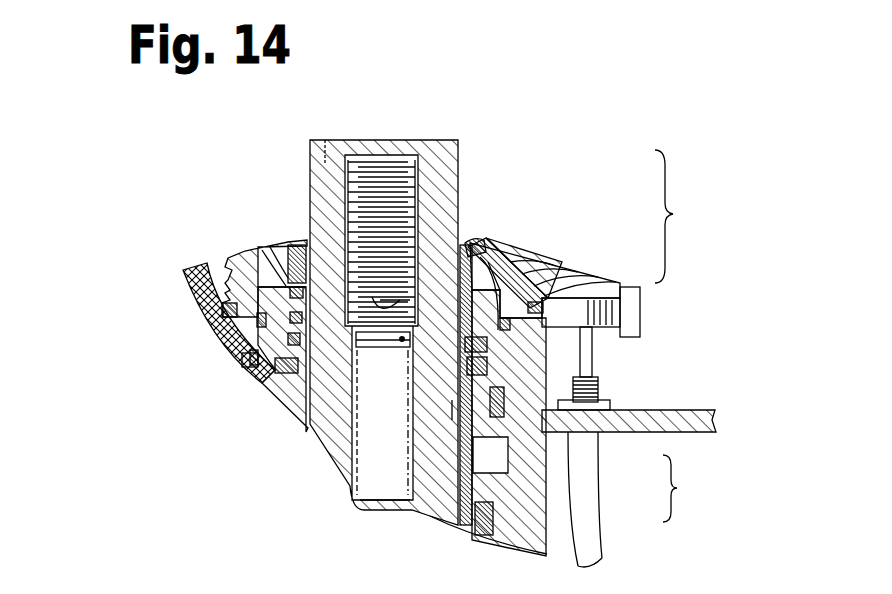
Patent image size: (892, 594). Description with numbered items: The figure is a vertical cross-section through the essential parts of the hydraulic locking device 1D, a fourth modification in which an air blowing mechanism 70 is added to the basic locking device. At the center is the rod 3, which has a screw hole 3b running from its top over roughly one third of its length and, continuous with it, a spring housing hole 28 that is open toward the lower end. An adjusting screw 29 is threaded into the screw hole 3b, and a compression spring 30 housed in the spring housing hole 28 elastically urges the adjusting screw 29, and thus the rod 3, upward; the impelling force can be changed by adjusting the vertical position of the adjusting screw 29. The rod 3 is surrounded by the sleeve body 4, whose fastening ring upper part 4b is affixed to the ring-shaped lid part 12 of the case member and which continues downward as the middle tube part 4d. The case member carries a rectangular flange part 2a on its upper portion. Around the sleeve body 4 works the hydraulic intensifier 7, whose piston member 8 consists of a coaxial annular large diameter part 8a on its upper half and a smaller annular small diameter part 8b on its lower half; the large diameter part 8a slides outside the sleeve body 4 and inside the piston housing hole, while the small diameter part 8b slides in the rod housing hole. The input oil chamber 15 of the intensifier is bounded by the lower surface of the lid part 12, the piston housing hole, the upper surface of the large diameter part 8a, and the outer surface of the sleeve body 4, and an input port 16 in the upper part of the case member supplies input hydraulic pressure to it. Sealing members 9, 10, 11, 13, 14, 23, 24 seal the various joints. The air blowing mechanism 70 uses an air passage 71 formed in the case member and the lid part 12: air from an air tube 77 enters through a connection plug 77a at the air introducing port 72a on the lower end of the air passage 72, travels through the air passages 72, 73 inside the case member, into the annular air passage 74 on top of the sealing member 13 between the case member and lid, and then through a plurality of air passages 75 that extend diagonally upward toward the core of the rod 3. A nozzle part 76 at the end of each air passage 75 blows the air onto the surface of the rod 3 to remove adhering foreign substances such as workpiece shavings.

The hydraulic locking device 1D is at (626, 124).
The flange part 2a is at (612, 399).
The rod 3 is at (460, 172).
The screw hole 3b is at (372, 180).
The sleeve body 4 is at (447, 385).
The fastening ring upper part 4b is at (512, 240).
The middle tube part 4d is at (452, 408).
The hydraulic intensifier 7 is at (207, 262).
The piston member 8 is at (681, 488).
The large diameter part 8a is at (548, 453).
The small diameter part 8b is at (548, 493).
The sealing member 9 is at (512, 405).
The sealing member 10 is at (457, 340).
The sealing member 11 is at (497, 532).
The lid part 12 is at (545, 266).
The sealing member 13 is at (510, 423).
The sealing member 14 is at (516, 262).
The input oil chamber 15 is at (262, 292).
The input port 16 is at (248, 368).
The sealing member 23 is at (297, 245).
The sealing member 24 is at (277, 262).
The spring housing hole 28 is at (407, 497).
The adjusting screw 29 is at (408, 292).
The compression spring 30 is at (373, 433).
The air blowing mechanism 70 is at (520, 247).
The air passage 71 is at (682, 216).
The air passage 72 is at (600, 284).
The air introducing port 72a is at (633, 318).
The air passage 73 is at (585, 268).
The annular air passage 74 is at (570, 256).
The air passages 75 is at (562, 242).
The nozzle part 76 is at (482, 238).
The air tube 77 is at (593, 527).
The connection plug 77a is at (600, 381).